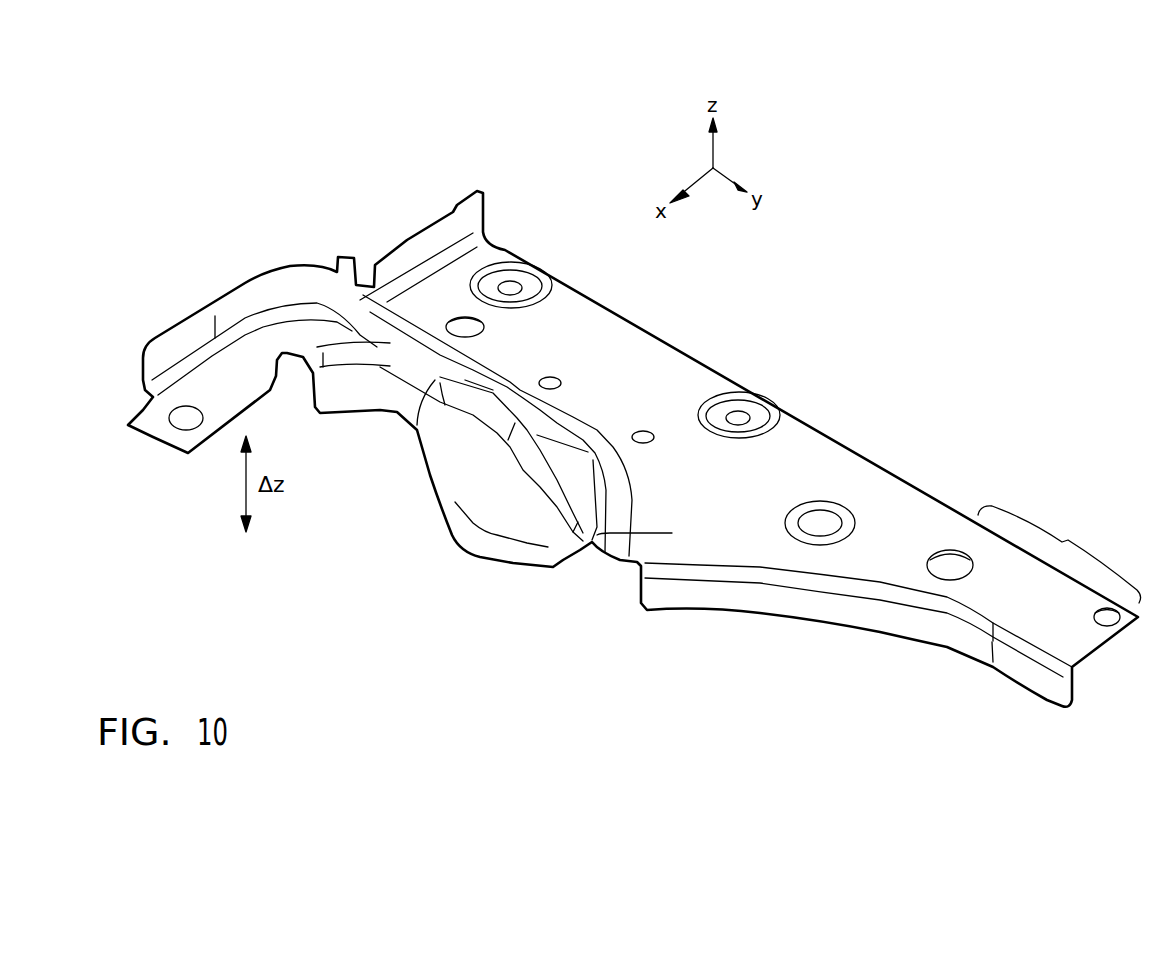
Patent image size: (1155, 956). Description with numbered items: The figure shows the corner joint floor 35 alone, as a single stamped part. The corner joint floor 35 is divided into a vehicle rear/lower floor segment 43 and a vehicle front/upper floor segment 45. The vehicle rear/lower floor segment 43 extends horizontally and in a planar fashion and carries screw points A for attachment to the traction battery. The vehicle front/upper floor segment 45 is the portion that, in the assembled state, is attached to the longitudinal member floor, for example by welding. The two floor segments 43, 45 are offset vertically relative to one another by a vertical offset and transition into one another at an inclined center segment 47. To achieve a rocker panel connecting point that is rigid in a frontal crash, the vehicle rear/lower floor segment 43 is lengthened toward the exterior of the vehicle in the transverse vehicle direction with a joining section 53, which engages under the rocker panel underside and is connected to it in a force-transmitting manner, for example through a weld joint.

The corner joint floor 35 is at (441, 140).
The vehicle rear/lower floor segment 43 is at (645, 358).
The vehicle front/upper floor segment 45 is at (153, 420).
The inclined center segment 47 is at (380, 338).
The joining section 53 is at (1068, 541).
The screw points A is at (510, 288).